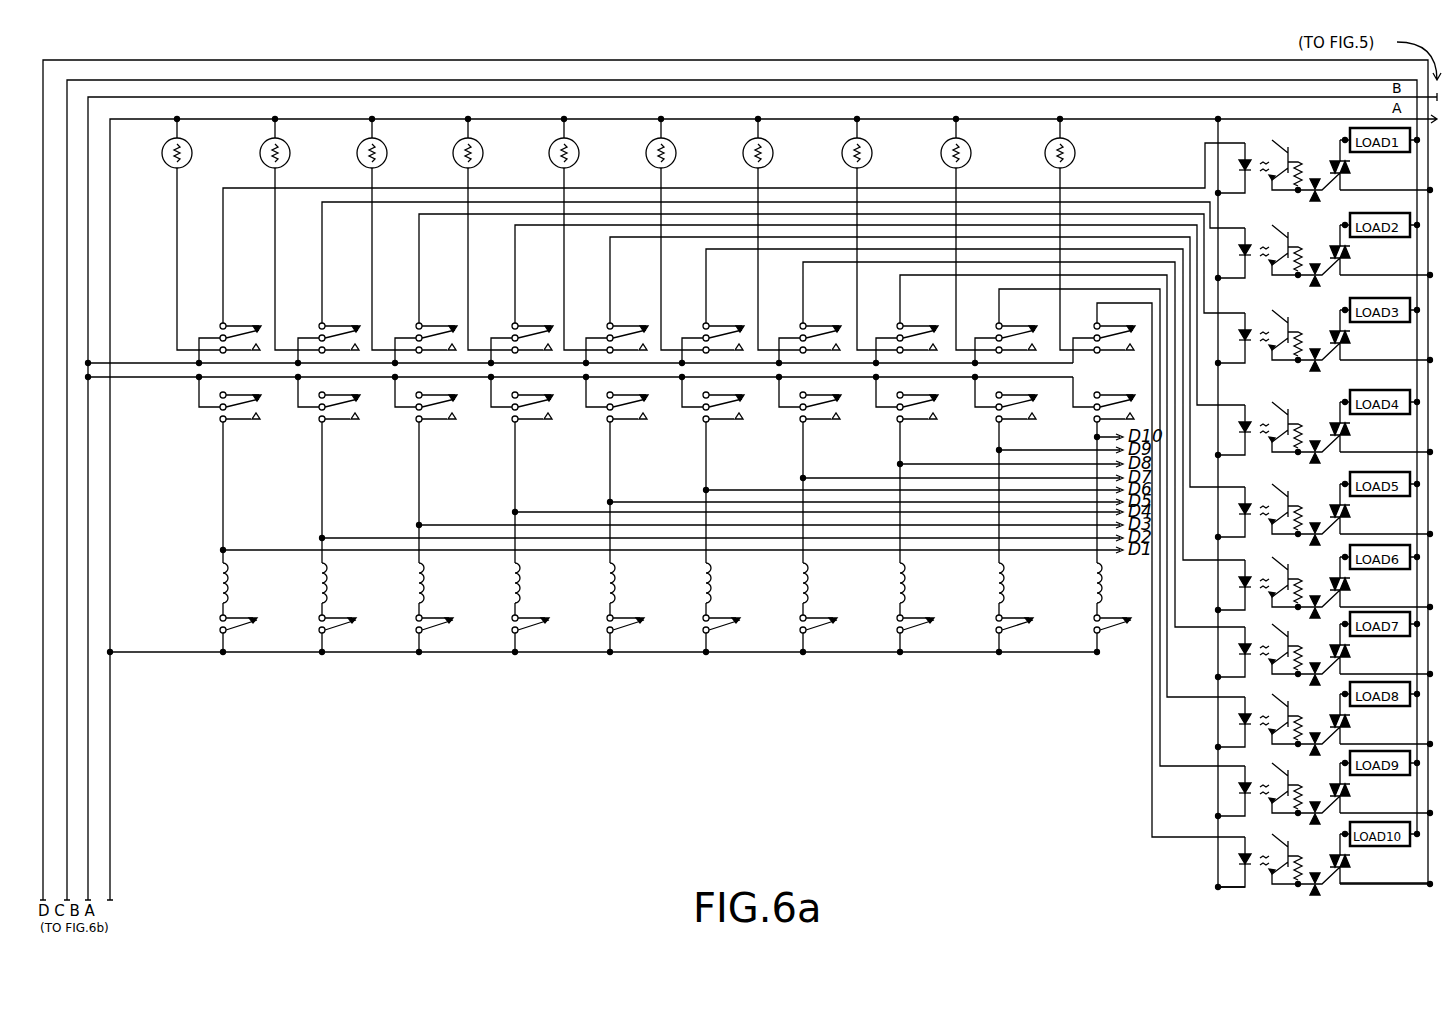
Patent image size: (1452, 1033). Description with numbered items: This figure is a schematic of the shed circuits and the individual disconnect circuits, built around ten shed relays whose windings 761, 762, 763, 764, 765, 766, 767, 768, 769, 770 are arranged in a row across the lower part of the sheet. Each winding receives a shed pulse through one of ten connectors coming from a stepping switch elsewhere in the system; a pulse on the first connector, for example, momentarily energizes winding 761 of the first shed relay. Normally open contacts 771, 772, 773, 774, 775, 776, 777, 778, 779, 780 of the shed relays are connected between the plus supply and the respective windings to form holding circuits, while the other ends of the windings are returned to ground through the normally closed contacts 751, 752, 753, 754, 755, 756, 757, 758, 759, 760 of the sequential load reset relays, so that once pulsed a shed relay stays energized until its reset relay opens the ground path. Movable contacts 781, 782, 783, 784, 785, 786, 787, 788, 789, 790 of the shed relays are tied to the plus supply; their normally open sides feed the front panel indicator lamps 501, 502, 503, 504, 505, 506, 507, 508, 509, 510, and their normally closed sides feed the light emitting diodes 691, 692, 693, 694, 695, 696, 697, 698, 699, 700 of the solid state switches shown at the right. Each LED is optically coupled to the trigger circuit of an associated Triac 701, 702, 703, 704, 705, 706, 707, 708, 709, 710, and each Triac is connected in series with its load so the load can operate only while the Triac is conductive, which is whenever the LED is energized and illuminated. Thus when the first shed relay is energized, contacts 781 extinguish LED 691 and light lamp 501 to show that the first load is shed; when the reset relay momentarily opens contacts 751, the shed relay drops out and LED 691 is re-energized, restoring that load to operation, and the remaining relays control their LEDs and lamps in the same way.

The indicator lamp 501 is at (192, 150).
The indicator lamp 502 is at (290, 150).
The indicator lamp 503 is at (387, 150).
The indicator lamp 504 is at (483, 150).
The indicator lamp 505 is at (579, 150).
The indicator lamp 506 is at (676, 150).
The indicator lamp 507 is at (773, 150).
The indicator lamp 508 is at (872, 150).
The indicator lamp 509 is at (971, 150).
The indicator lamp 510 is at (1075, 150).
The movable contacts of relay K21 781 is at (260, 326).
The movable contacts of relay K22 782 is at (359, 326).
The movable contacts of relay K23 783 is at (456, 326).
The movable contacts of relay K24 784 is at (552, 326).
The movable contacts of relay K25 785 is at (647, 326).
The movable contacts of relay K26 786 is at (743, 326).
The movable contacts of relay K27 787 is at (840, 326).
The movable contacts of relay K28 788 is at (937, 326).
The movable contacts of relay K29 789 is at (1036, 326).
The movable contacts of relay K30 790 is at (1135, 314).
The normally open contacts of relay K21 771 is at (261, 428).
The normally open contacts of relay K22 772 is at (360, 428).
The normally open contacts of relay K23 773 is at (457, 428).
The normally open contacts of relay K24 774 is at (553, 428).
The normally open contacts of relay K25 775 is at (648, 428).
The normally open contacts of relay K26 776 is at (744, 428).
The normally open contacts of relay K27 777 is at (841, 428).
The normally open contacts of relay K28 778 is at (938, 428).
The normally open contacts of relay K29 779 is at (1037, 428).
The normally open contacts of relay K30 780 is at (1134, 395).
The winding of relay K21 761 is at (215, 585).
The winding of relay K22 762 is at (314, 585).
The winding of relay K23 763 is at (411, 585).
The winding of relay K24 764 is at (507, 585).
The winding of relay K25 765 is at (602, 585).
The winding of relay K26 766 is at (698, 585).
The winding of relay K27 767 is at (795, 585).
The winding of relay K28 768 is at (892, 585).
The winding of relay K29 769 is at (991, 585).
The winding of relay K30 770 is at (1089, 585).
The normally closed contacts of relay K31 751 is at (259, 622).
The normally closed contacts of relay K32 752 is at (358, 622).
The normally closed contacts of relay K33 753 is at (455, 622).
The normally closed contacts of relay K34 754 is at (551, 622).
The normally closed contacts of relay K35 755 is at (646, 622).
The normally closed contacts of relay K36 756 is at (742, 622).
The normally closed contacts of relay K37 757 is at (839, 622).
The normally closed contacts of relay K38 758 is at (936, 622).
The normally closed contacts of relay K39 759 is at (1035, 622).
The normally closed contacts of relay K40 760 is at (1133, 622).
The light emitting diode 691 is at (1263, 139).
The light emitting diode 692 is at (1263, 224).
The light emitting diode 693 is at (1263, 309).
The light emitting diode 694 is at (1263, 401).
The light emitting diode 695 is at (1263, 483).
The light emitting diode 696 is at (1263, 556).
The light emitting diode 697 is at (1263, 623).
The light emitting diode 698 is at (1263, 693).
The light emitting diode 699 is at (1263, 762).
The light emitting diode 700 is at (1263, 833).
The Triac 701 is at (1352, 165).
The Triac 702 is at (1352, 250).
The Triac 703 is at (1352, 335).
The Triac 704 is at (1352, 427).
The Triac 705 is at (1352, 509).
The Triac 706 is at (1352, 582).
The Triac 707 is at (1352, 649).
The Triac 708 is at (1352, 719).
The Triac 709 is at (1352, 788).
The Triac 710 is at (1352, 859).